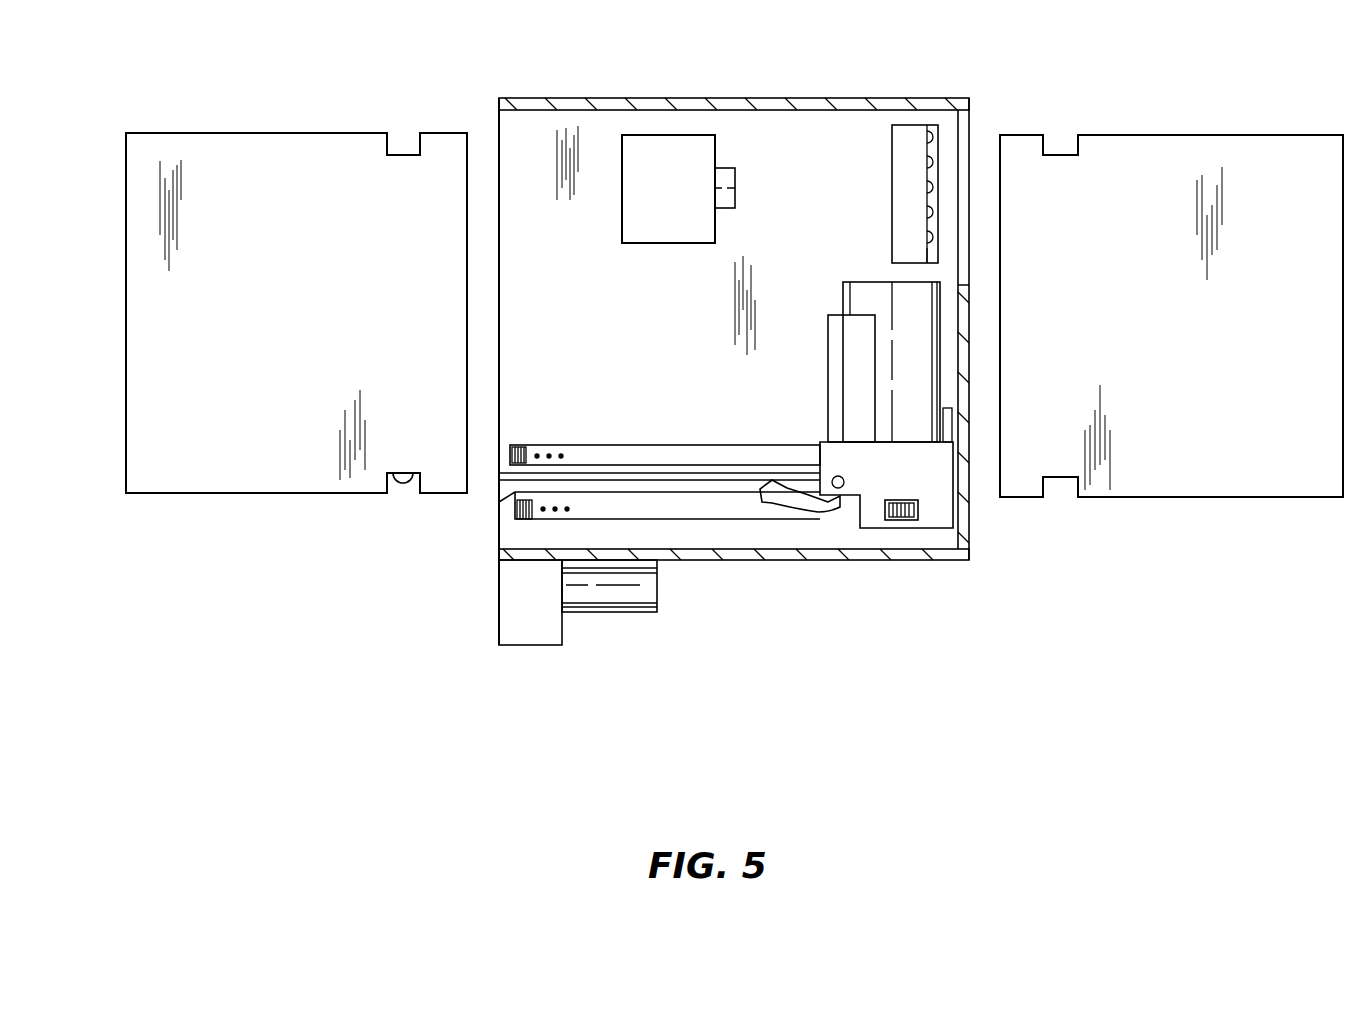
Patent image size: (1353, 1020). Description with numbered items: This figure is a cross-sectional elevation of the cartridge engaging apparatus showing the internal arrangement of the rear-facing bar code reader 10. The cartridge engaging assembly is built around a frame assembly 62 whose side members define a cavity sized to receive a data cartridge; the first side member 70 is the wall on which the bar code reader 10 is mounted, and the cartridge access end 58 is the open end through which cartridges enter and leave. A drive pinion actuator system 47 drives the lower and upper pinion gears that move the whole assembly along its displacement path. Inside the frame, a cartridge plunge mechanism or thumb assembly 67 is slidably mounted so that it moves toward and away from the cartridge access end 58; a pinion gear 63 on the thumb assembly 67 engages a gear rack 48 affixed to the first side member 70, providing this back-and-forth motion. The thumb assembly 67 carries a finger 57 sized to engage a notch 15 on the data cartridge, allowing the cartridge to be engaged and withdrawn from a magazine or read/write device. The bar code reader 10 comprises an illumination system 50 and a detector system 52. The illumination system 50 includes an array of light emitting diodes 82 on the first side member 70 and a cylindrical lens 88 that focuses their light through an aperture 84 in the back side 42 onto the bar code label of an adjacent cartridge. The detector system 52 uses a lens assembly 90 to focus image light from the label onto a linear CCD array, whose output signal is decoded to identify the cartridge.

The rear-facing bar code reader 10 is at (479, 66).
The notch 15 is at (405, 472).
The back side 42 is at (972, 552).
The drive pinion actuator system 47 is at (605, 618).
The gear rack 48 is at (523, 518).
The illumination system 50 is at (888, 151).
The detector system 52 is at (660, 248).
The finger 57 is at (798, 513).
The cartridge access end 58 is at (499, 120).
The frame assembly 62 is at (683, 94).
The pinion gear 63 is at (918, 510).
The thumb assembly 67 is at (826, 373).
The first side member 70 is at (800, 98).
The light emitting diodes 82 is at (933, 238).
The aperture 84 is at (970, 130).
The cylindrical lens 88 is at (937, 253).
The lens assembly 90 is at (728, 211).